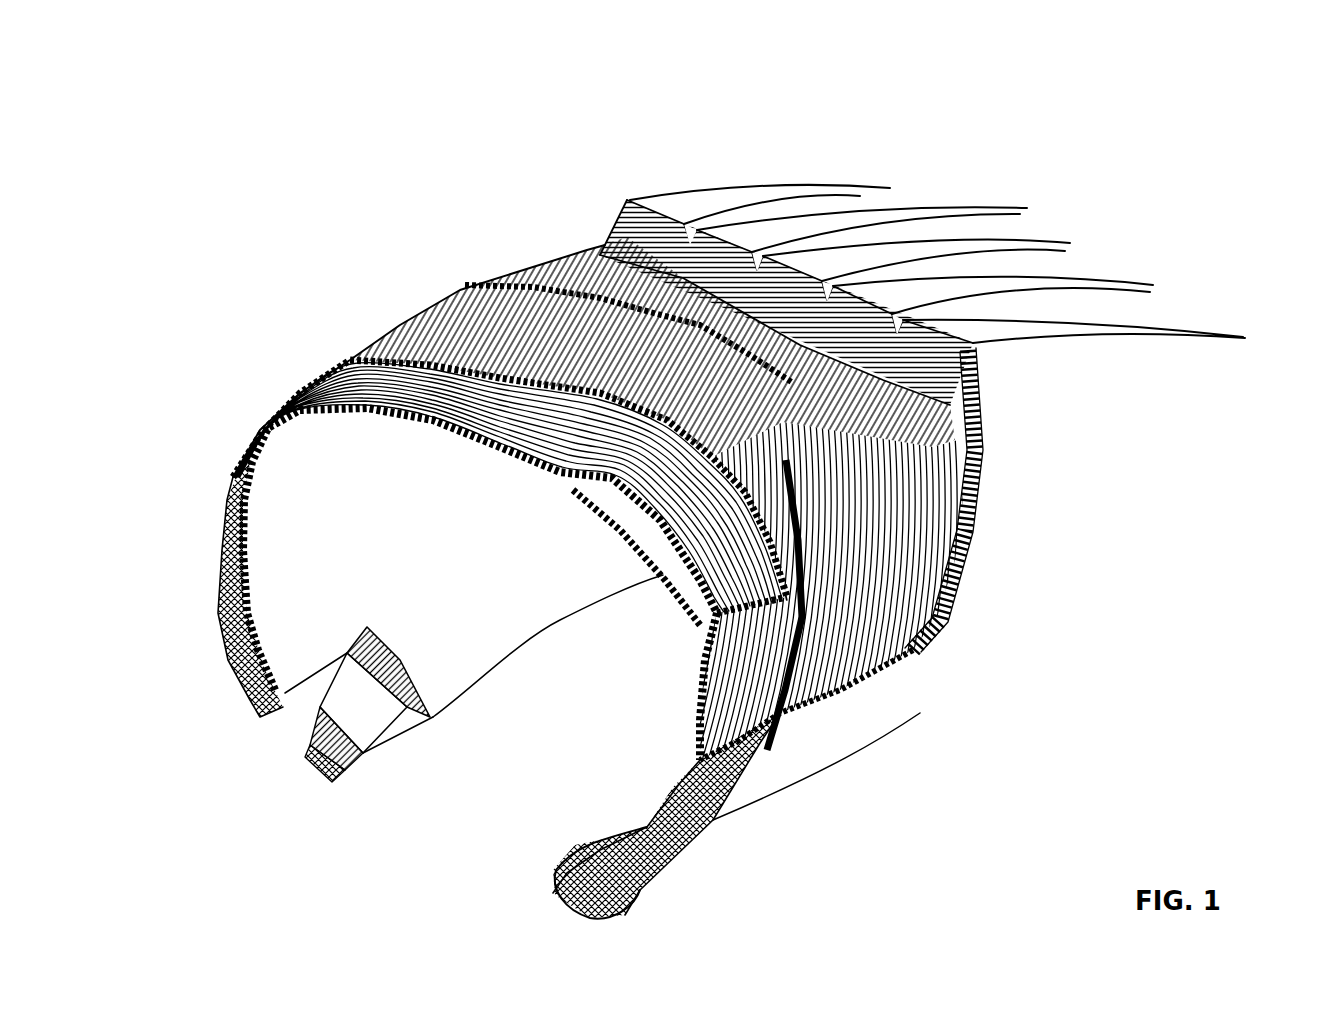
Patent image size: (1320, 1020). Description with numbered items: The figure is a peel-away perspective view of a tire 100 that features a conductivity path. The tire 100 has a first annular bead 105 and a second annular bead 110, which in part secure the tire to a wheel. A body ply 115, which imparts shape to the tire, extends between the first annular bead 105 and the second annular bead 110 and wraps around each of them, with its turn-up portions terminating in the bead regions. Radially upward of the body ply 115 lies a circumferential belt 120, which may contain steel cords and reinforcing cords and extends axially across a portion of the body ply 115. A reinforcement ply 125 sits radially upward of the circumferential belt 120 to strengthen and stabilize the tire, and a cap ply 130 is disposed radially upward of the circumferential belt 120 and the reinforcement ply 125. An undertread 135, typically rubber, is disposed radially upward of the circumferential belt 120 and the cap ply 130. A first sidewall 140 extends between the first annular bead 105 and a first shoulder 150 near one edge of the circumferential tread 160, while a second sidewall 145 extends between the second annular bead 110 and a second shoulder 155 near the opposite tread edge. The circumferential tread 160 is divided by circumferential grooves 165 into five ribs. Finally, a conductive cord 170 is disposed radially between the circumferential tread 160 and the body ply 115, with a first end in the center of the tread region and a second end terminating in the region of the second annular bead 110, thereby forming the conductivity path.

The tire 100 is at (278, 237).
The first annular bead 105 is at (370, 720).
The second annular bead 110 is at (640, 893).
The body ply 115 is at (697, 640).
The circumferential belt 120 is at (490, 303).
The reinforcement ply 125 is at (528, 268).
The cap ply 130 is at (590, 250).
The undertread 135 is at (637, 255).
The first sidewall 140 is at (230, 668).
The second sidewall 145 is at (1087, 493).
The first shoulder 150 is at (297, 377).
The second shoulder 155 is at (1103, 380).
The circumferential tread 160 is at (700, 237).
The circumferential grooves 165 is at (760, 265).
The conductive cord 170 is at (803, 597).